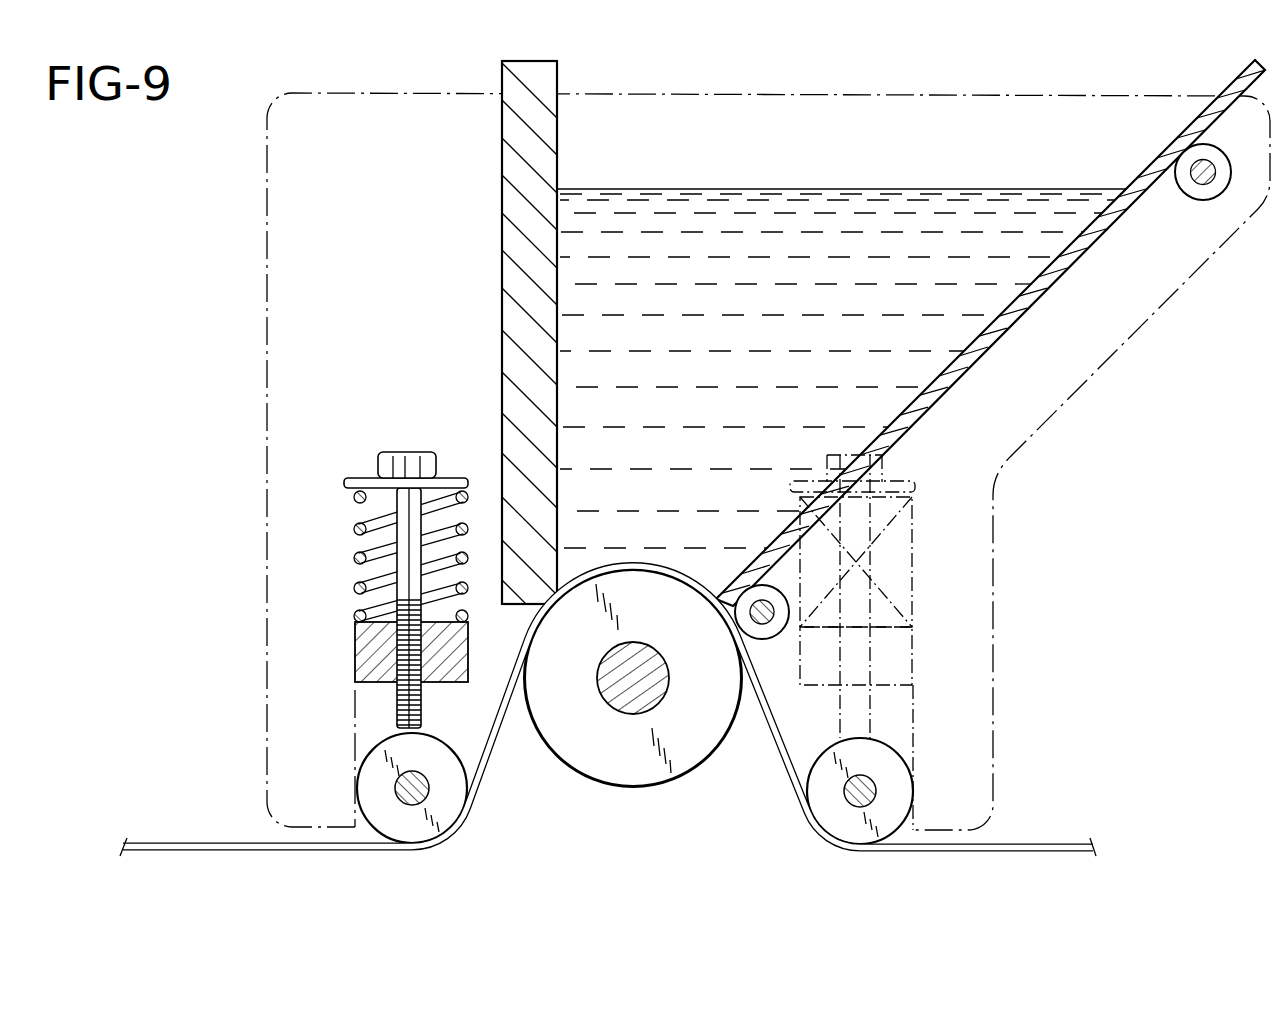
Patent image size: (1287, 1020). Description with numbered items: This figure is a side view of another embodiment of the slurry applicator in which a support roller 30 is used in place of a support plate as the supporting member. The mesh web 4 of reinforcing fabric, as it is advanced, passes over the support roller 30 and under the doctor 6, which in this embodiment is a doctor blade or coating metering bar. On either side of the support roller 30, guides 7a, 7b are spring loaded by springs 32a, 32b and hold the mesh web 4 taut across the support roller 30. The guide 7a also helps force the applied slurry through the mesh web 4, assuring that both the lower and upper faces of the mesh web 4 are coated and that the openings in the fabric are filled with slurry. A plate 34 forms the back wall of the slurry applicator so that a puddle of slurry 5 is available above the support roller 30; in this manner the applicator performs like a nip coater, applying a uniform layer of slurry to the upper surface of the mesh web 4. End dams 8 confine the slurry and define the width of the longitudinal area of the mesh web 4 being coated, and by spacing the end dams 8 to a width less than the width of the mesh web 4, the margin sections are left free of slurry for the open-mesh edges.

The mesh web 4 is at (1003, 852).
The slurry 5 is at (820, 206).
The doctor 6 is at (502, 305).
The guide 7a is at (398, 824).
The guide 7b is at (848, 833).
The end dams 8 is at (1040, 405).
The support roller 30 is at (656, 788).
The spring 32a is at (343, 547).
The spring 32b is at (921, 539).
The plate 34 is at (1004, 322).